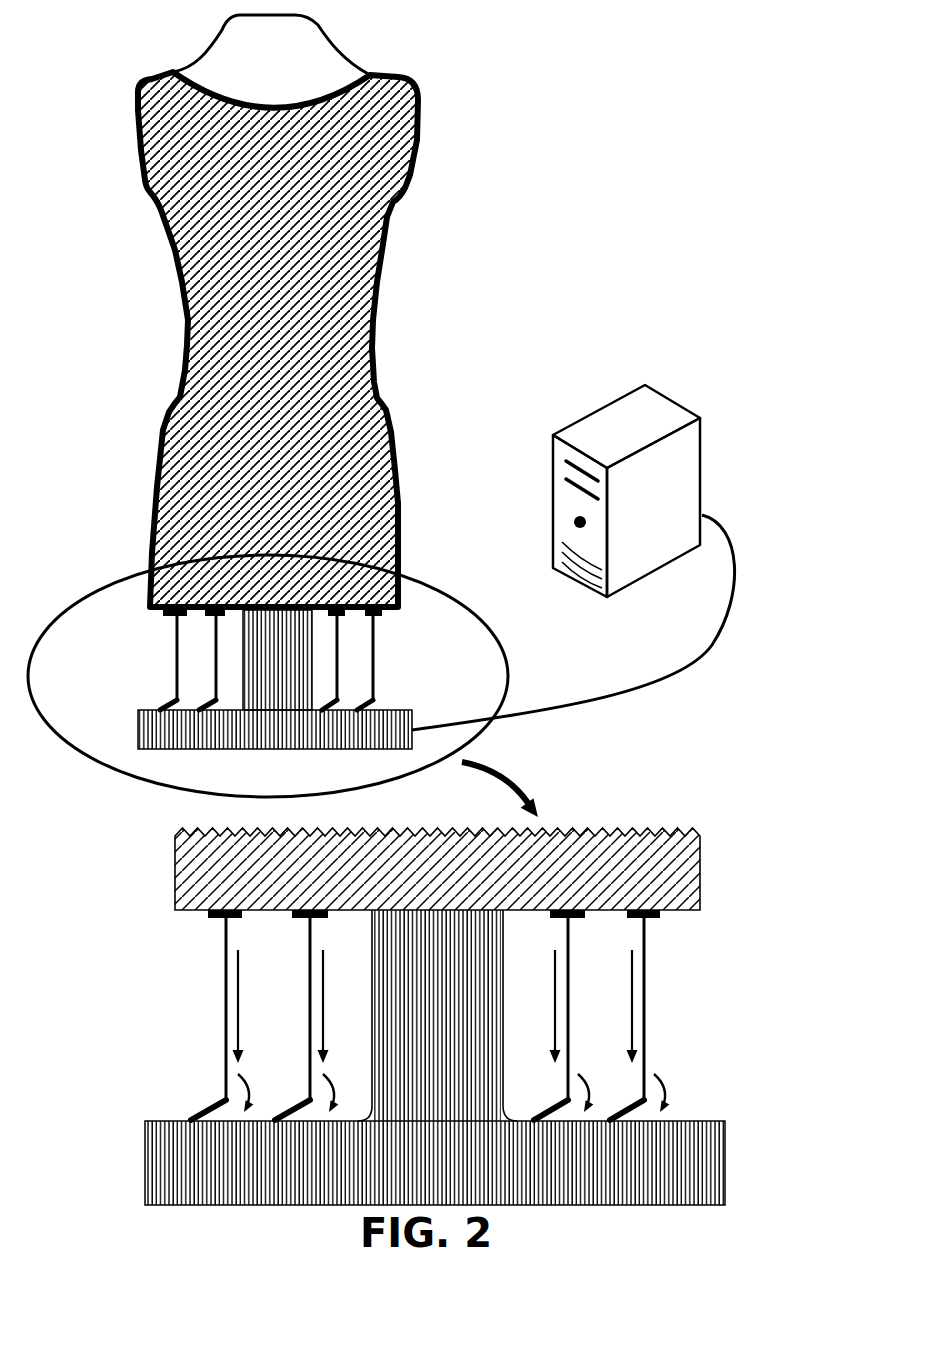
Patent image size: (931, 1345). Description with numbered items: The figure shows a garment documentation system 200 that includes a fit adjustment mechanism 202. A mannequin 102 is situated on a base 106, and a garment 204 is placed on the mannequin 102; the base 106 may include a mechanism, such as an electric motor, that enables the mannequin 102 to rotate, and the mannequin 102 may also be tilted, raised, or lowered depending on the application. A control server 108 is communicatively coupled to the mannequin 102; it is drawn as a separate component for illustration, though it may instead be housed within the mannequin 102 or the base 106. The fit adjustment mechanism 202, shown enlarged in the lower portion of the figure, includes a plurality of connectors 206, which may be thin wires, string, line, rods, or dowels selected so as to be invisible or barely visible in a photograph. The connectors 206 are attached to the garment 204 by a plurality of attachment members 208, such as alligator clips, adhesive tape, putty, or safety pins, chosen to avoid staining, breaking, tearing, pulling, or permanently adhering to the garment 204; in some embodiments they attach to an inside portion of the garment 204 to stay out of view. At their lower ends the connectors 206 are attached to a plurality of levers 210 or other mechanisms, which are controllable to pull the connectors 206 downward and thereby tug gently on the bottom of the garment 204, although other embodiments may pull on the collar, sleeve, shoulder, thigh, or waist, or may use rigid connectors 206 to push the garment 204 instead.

The garment documentation system 200 is at (103, 52).
The mannequin 102 is at (336, 317).
The garment 204 is at (333, 339).
The fit adjustment mechanism 202 is at (100, 562).
The base 106 is at (457, 962).
The control server 108 is at (573, 557).
The connectors 206 is at (434, 1009).
The attachment members 208 is at (434, 934).
The levers 210 is at (434, 1090).